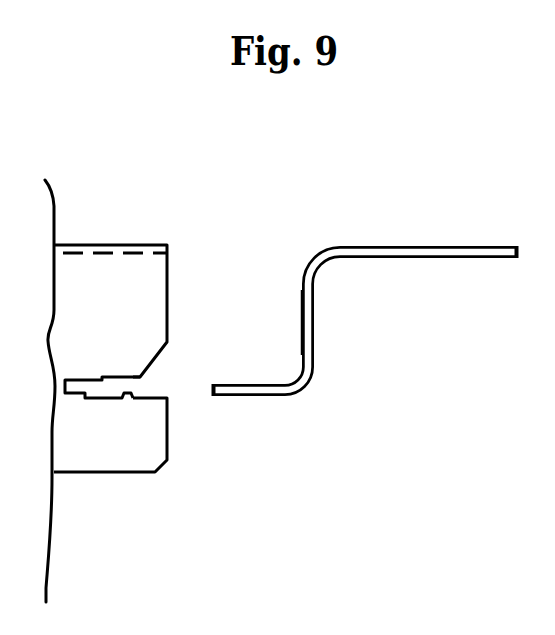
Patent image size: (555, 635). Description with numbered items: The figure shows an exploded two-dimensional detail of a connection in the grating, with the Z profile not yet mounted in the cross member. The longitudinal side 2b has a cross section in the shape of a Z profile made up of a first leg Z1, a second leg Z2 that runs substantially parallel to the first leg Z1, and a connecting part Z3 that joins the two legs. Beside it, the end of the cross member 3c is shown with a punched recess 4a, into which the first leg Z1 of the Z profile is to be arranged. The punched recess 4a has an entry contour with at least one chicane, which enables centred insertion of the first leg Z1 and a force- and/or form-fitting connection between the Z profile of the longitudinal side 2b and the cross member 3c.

The cross member 3c is at (101, 313).
The punched recess 4a is at (153, 380).
The longitudinal side 2b is at (317, 227).
The first leg Z1 is at (255, 396).
The second leg Z2 is at (453, 258).
The connecting part Z3 is at (314, 318).